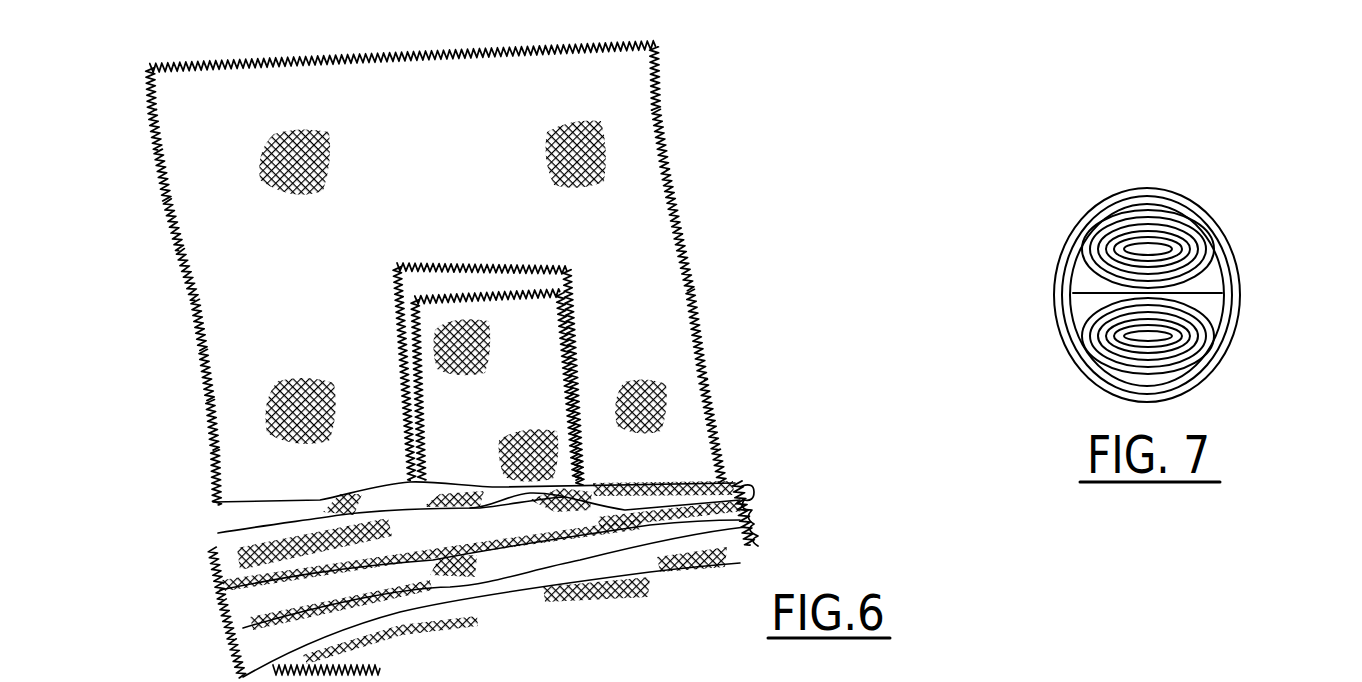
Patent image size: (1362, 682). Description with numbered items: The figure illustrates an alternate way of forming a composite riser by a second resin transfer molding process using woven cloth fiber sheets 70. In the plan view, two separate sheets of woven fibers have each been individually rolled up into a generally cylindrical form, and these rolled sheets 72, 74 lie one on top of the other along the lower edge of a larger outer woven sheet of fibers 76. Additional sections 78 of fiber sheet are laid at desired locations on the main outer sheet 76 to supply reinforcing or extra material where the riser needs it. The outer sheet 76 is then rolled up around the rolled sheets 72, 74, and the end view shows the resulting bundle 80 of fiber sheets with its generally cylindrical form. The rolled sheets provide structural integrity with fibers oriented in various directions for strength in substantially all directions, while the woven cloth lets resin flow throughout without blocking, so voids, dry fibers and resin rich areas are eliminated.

In FIG. 6, the woven cloth fiber sheets 70 is at (745, 478).
In FIG. 6, the rolled sheet 72 is at (222, 556).
In FIG. 6, the rolled sheet 74 is at (247, 648).
In FIG. 6, the outer woven sheet of fibers 76 is at (673, 263).
In FIG. 6, the additional sections of fiber sheet 78 is at (542, 345).
In FIG. 7, the bundle of fiber sheets 80 is at (1236, 248).